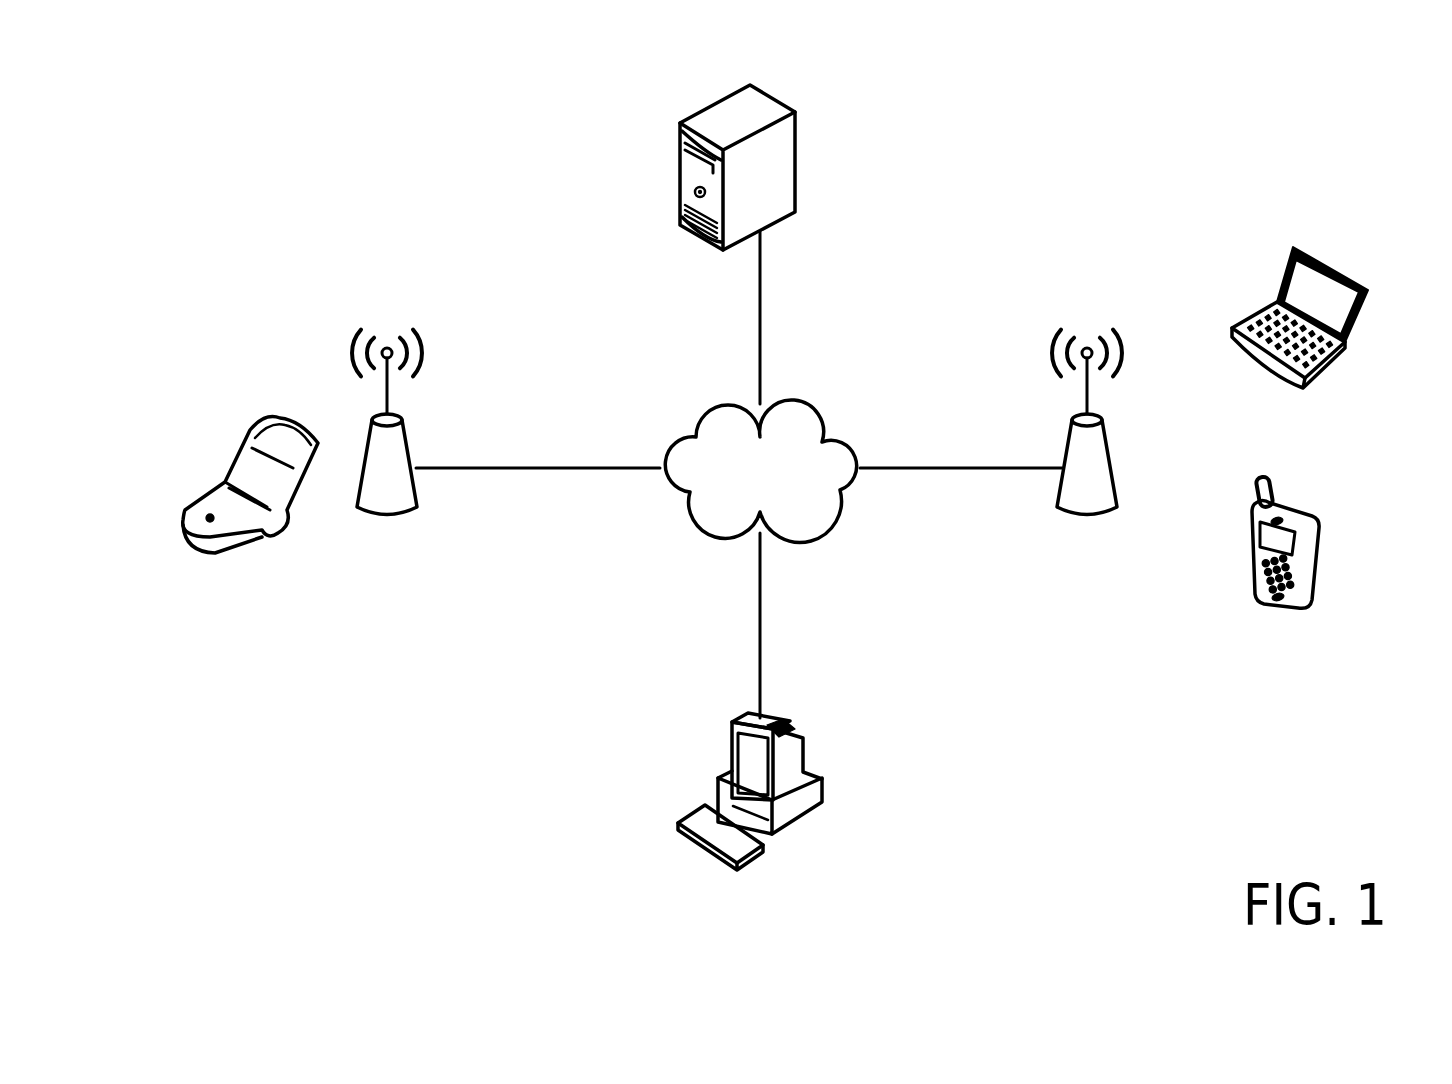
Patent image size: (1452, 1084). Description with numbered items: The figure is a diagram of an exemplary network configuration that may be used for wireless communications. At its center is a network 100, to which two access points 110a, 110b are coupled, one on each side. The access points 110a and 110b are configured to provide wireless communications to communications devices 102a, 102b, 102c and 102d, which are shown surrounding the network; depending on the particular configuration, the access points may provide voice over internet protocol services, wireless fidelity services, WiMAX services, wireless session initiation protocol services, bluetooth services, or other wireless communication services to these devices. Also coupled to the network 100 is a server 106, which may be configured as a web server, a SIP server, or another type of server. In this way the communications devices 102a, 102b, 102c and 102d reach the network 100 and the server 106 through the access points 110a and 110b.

The network 100 is at (832, 433).
The server 106 is at (795, 160).
The access point 110a is at (410, 430).
The access point 110b is at (1065, 442).
The communications device 102a is at (287, 417).
The communications device 102b is at (1360, 317).
The communications device 102c is at (1302, 510).
The communications device 102d is at (808, 740).